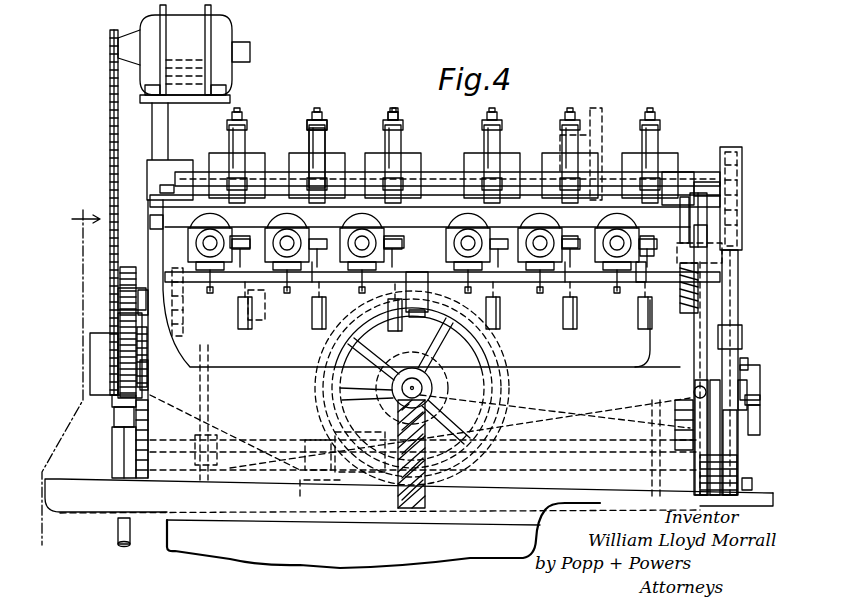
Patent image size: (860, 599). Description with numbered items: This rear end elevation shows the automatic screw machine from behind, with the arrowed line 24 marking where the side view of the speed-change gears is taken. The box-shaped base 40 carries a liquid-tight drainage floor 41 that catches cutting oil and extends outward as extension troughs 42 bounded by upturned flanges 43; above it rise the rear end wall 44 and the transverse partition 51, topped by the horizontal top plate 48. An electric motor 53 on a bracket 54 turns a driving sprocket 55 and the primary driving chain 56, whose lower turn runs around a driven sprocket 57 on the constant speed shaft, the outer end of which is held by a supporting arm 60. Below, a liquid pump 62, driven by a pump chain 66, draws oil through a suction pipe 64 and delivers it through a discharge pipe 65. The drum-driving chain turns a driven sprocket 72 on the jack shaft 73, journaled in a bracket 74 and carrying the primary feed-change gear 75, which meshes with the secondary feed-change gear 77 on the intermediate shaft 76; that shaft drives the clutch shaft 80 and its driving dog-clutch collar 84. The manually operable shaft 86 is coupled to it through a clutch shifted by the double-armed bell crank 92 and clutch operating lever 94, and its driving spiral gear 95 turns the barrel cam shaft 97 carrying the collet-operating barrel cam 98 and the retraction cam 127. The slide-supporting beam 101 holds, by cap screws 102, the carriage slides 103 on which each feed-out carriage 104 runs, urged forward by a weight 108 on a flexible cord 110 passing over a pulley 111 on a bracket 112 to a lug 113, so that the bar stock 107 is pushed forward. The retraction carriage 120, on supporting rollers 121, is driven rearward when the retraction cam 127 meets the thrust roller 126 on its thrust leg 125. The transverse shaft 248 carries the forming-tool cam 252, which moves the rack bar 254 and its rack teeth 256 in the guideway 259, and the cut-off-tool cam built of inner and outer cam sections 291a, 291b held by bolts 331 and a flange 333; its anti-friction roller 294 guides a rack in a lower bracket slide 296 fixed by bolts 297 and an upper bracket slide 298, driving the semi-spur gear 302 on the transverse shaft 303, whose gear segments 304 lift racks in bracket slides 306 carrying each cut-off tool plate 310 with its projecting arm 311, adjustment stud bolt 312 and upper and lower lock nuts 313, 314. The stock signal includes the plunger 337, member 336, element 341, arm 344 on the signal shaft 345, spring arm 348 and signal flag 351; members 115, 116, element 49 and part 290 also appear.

The center line / direction of travel 24 is at (63, 377).
The base 40 is at (202, 551).
The drainage floor 41 is at (317, 9).
The extension troughs 42 is at (80, 514).
The upturned flanges 43 is at (45, 481).
The rear end wall 44 is at (555, 348).
The top plate 48 is at (212, 195).
The link 49 is at (215, 403).
The transverse partition 51 is at (456, 188).
The electric motor 53 is at (225, 28).
The bracket 54 is at (170, 137).
The driving sprocket 55 is at (113, 30).
The primary driving chain 56 is at (110, 77).
The driven sprocket 57 is at (118, 410).
The supporting arm 60 is at (90, 362).
The liquid pump 62 is at (112, 459).
The suction pipe 64 is at (128, 535).
The discharge pipe 65 is at (116, 430).
The pump chain 66 is at (148, 461).
The driven sprocket 72 is at (183, 315).
The jack shaft 73 is at (118, 300).
The bracket 74 is at (263, 310).
The primary feed-change gear 75 is at (130, 267).
The intermediate shaft 76 is at (150, 362).
The secondary feed-change gear 77 is at (118, 337).
The clutch shaft 80 is at (425, 440).
The driving dog-clutch collar 84 is at (318, 440).
The manually operable shaft 86 is at (605, 446).
The double-armed bell crank 92 is at (320, 492).
The clutch operating lever 94 is at (420, 426).
The driving spiral gear 95 is at (428, 503).
The barrel cam shaft 97 is at (403, 388).
The collet-operating barrel cam 98 is at (490, 350).
The slide-supporting beam 101 is at (636, 272).
The cap screws 102 is at (560, 290).
The carriage slides 103 is at (566, 262).
The feed-out carriage 104 is at (485, 232).
The bar stock 107 is at (212, 228).
The weight 108 is at (250, 326).
The flexible cord 110 is at (500, 299).
The pulley 111 is at (312, 266).
The bracket 112 is at (638, 300).
The lug 113 is at (395, 236).
The gear head 115 is at (288, 228).
The gear head 116 is at (376, 228).
The retraction carriage 120 is at (262, 236).
The supporting rollers 121 is at (148, 225).
The thrust leg 125 is at (420, 318).
The thrust roller 126 is at (398, 324).
The retraction cam 127 is at (480, 343).
The transverse shaft 248 is at (678, 428).
The forming-tool cam 252 is at (700, 468).
The rack bar 254 is at (694, 390).
The rack teeth 256 is at (700, 276).
The guideway 259 is at (648, 364).
The gear 290 is at (740, 458).
The inner cam section 291a is at (740, 470).
The outer cam section 291b is at (750, 365).
The anti-friction roller 294 is at (760, 377).
The bracket slide 296 is at (742, 336).
The bolts 297 is at (738, 304).
The bracket slide 298 is at (745, 147).
The semi-spur gear 302 is at (742, 187).
The transverse shaft 303 is at (437, 173).
The gear segments 304 is at (322, 144).
The post 306 is at (312, 138).
The cut-off tool plate 310 is at (464, 125).
The projecting arm 311 is at (322, 122).
The adjustment stud bolt 312 is at (394, 112).
The upper lock nut 313 is at (400, 116).
The lower lock nut 314 is at (327, 125).
The bolts 331 is at (760, 399).
The flange 333 is at (760, 431).
The rod 336 is at (720, 257).
The plunger 337 is at (646, 240).
The bar 341 is at (724, 252).
The arm 344 is at (707, 231).
The signal shaft 345 is at (612, 192).
The spring arm 348 is at (689, 210).
The signal flag 351 is at (597, 190).